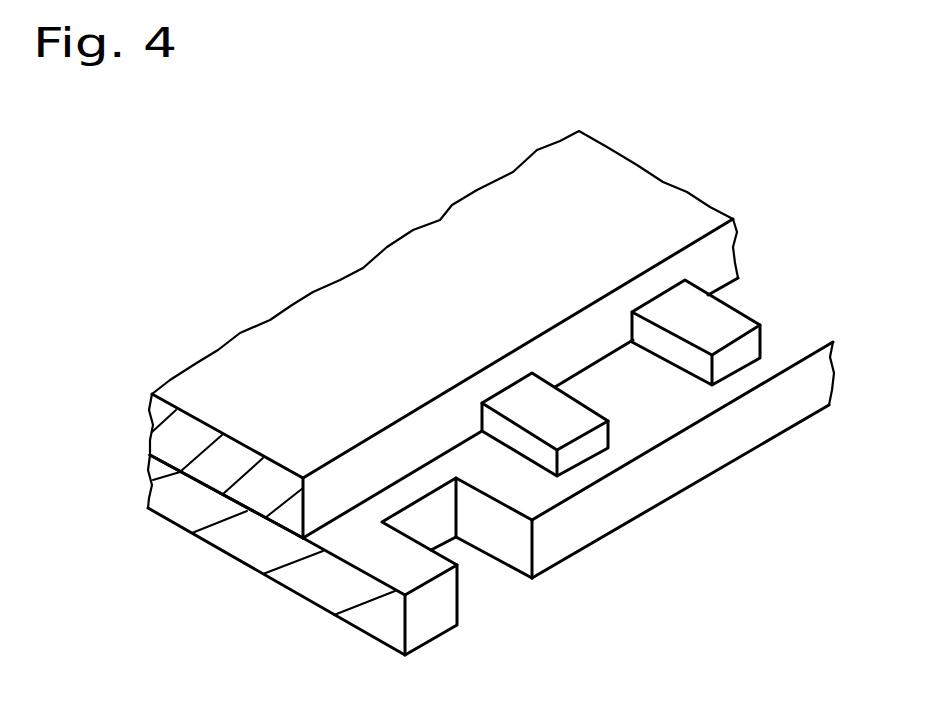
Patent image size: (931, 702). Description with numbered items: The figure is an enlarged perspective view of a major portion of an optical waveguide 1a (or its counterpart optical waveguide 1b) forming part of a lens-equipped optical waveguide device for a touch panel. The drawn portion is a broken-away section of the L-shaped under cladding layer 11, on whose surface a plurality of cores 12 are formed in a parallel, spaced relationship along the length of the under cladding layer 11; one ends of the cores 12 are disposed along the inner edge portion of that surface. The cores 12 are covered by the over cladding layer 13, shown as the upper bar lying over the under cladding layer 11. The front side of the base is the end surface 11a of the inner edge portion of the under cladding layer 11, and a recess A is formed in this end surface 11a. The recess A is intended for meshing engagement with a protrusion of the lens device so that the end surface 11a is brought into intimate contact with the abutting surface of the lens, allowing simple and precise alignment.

The L-shaped optical waveguide 1a is at (337, 250).
The L-shaped optical waveguide 1b is at (508, 393).
The under cladding layer 11 is at (805, 332).
The end surface of under cladding layer 11a is at (683, 475).
The cores 12 is at (728, 322).
The over cladding layer 13 is at (685, 210).
The recess A is at (432, 528).